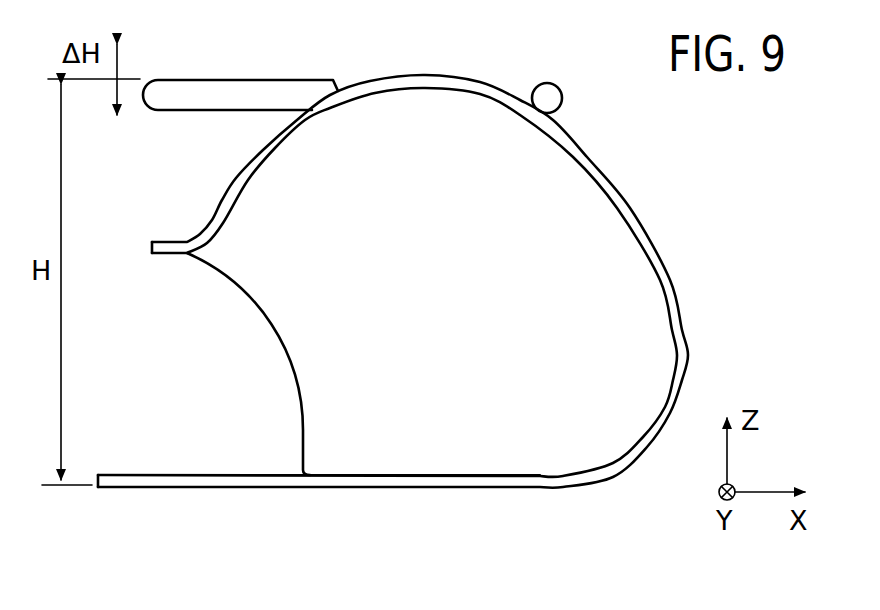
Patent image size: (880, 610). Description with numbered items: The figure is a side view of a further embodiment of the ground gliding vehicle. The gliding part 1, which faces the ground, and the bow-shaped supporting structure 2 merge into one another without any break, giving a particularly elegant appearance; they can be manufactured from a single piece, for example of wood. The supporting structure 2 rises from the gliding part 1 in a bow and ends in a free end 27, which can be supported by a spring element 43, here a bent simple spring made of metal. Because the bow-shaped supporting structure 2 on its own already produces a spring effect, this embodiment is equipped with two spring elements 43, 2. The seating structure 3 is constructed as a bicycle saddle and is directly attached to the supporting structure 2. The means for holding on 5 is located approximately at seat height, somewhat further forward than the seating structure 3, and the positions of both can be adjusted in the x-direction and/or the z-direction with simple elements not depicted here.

The gliding part 1 is at (195, 480).
The supporting structure 2 is at (657, 233).
The seating structure 3 is at (228, 94).
The means for holding on 5 is at (537, 80).
The free end 27 is at (168, 242).
The spring element 43 is at (289, 357).